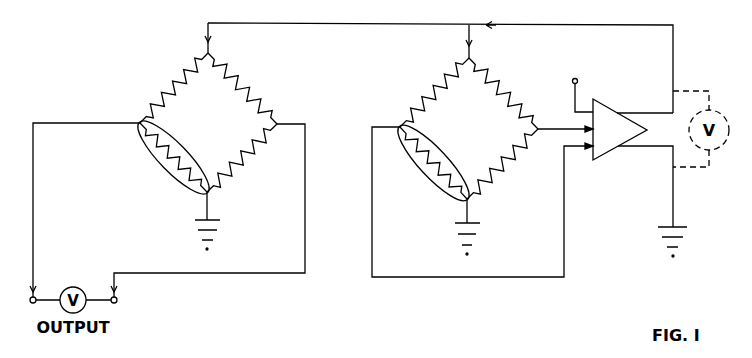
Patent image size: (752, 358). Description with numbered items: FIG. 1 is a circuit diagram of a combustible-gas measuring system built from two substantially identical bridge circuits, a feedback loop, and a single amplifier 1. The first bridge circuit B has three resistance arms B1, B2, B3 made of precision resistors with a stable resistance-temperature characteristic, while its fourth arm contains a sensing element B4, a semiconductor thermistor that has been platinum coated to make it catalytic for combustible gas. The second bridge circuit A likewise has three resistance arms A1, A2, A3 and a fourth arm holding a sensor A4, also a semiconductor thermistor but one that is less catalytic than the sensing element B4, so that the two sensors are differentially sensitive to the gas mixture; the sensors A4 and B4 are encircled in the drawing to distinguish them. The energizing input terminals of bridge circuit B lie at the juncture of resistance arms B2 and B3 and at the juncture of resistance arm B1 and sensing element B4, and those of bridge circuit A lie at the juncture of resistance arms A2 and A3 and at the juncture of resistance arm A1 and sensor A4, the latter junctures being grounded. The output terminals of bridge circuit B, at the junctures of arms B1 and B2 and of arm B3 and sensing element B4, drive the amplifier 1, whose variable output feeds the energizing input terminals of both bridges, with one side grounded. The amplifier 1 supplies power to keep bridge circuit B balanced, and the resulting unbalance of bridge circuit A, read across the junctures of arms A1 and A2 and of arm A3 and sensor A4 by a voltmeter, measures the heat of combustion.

The bridge circuit A is at (167, 175).
The resistance arm A1 is at (242, 158).
The resistance arm A2 is at (242, 88).
The resistance arm A3 is at (174, 88).
The sensor A4 is at (172, 158).
The bridge circuit B is at (482, 167).
The resistance arm B1 is at (503, 164).
The resistance arm B2 is at (503, 93).
The resistance arm B3 is at (434, 92).
The sensing element B4 is at (433, 163).
The amplifier 1 is at (630, 164).